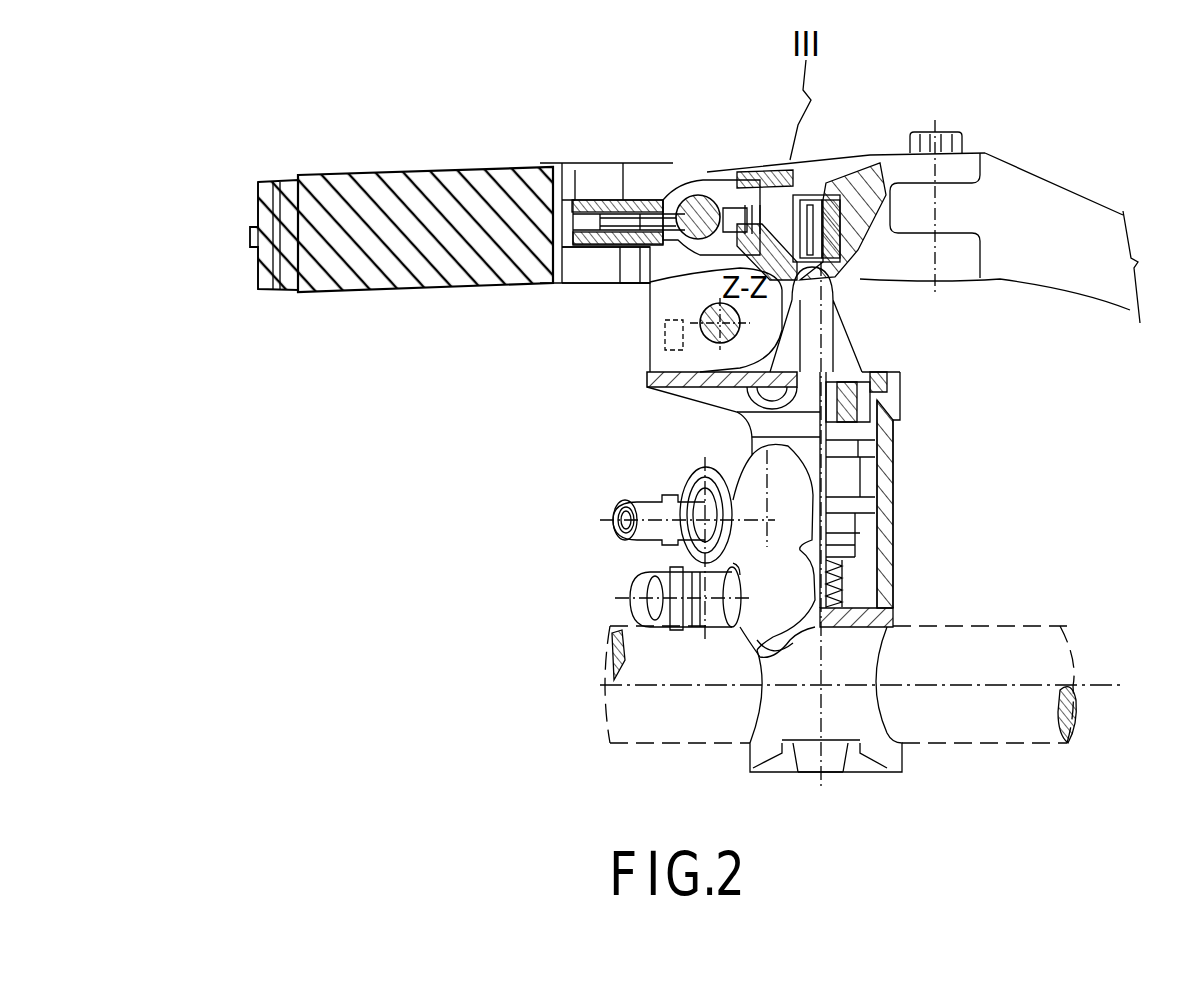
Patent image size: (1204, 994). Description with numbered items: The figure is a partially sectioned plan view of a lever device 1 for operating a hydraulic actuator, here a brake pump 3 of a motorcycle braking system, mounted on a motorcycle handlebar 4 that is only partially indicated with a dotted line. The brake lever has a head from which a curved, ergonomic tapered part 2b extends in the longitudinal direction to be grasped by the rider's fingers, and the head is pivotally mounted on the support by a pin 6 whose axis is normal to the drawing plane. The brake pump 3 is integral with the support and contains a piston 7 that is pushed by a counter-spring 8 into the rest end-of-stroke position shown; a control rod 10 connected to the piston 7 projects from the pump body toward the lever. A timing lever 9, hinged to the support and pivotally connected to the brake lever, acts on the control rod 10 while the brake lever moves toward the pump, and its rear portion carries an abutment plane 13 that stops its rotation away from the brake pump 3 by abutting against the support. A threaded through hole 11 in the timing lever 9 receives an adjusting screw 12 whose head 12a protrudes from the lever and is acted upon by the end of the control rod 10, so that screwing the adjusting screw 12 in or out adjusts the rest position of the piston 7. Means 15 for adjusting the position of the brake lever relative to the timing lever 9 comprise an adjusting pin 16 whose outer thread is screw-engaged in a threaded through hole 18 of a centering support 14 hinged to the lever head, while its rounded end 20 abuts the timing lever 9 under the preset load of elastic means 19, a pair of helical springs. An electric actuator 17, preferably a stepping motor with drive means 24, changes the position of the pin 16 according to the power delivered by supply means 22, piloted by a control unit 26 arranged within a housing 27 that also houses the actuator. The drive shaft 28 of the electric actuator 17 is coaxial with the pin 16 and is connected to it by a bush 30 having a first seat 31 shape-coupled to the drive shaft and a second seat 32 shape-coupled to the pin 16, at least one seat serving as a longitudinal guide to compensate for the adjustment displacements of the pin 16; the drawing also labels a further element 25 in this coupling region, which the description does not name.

The lever device 1 is at (345, 432).
The tapered part 2b is at (1058, 200).
The brake pump 3 is at (880, 528).
The motorcycle handlebar 4 is at (1012, 626).
The pin 6 is at (712, 306).
The piston 7 is at (853, 492).
The counter-spring 8 is at (842, 576).
The timing lever 9 is at (665, 304).
The control rod 10 is at (835, 327).
The threaded through hole 11 is at (866, 162).
The adjusting screw 12 is at (822, 160).
The head of the adjusting screw 12a is at (838, 285).
The abutment plane 13 is at (650, 388).
The centering support 14 is at (640, 285).
The means for adjusting the position of the brake lever 15 is at (631, 200).
The pin 16 is at (670, 190).
The electric actuator 17 is at (410, 175).
The threaded through hole 18 is at (688, 178).
The elastic means 19 is at (665, 347).
The end of the threaded pin 20 is at (753, 184).
The supply means 22 is at (290, 290).
The drive means 24 is at (590, 186).
The rod 25 is at (610, 282).
The control unit 26 is at (266, 182).
The housing 27 is at (352, 172).
The drive shaft 28 is at (575, 287).
The bush 30 is at (622, 200).
The first seat 31 is at (541, 163).
The second seat 32 is at (590, 283).